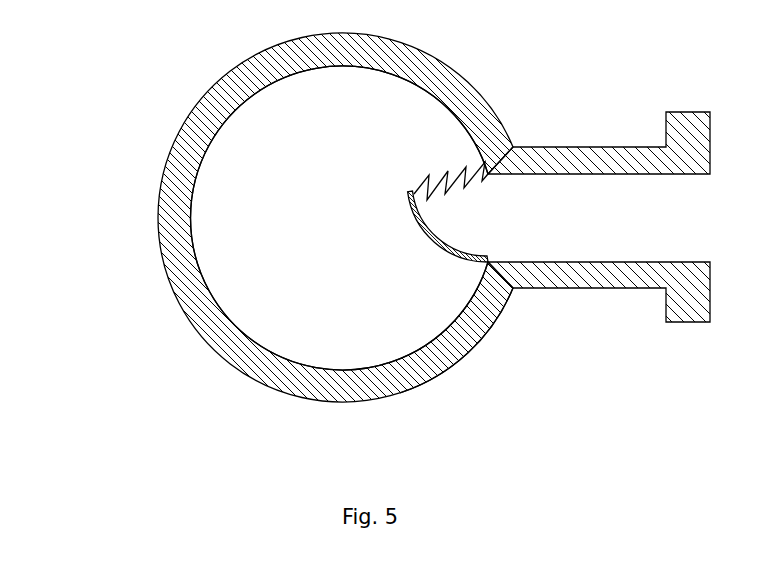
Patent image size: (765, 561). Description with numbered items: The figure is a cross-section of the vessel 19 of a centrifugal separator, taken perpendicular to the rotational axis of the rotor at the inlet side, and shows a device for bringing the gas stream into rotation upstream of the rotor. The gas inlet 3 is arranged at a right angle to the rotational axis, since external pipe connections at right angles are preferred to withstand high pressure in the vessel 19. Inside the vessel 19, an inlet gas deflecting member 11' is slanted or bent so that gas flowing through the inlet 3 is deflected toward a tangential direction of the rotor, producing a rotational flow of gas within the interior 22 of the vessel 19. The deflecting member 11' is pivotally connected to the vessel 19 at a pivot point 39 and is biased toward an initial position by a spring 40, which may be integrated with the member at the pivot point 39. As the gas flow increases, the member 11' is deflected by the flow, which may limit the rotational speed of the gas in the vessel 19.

The gas inlet 3 is at (525, 223).
The inlet gas deflecting member 11' is at (506, 364).
The vessel 19 is at (172, 217).
The inner cavity 22 is at (260, 192).
The pivot point 39 is at (490, 267).
The spring 40 is at (480, 162).